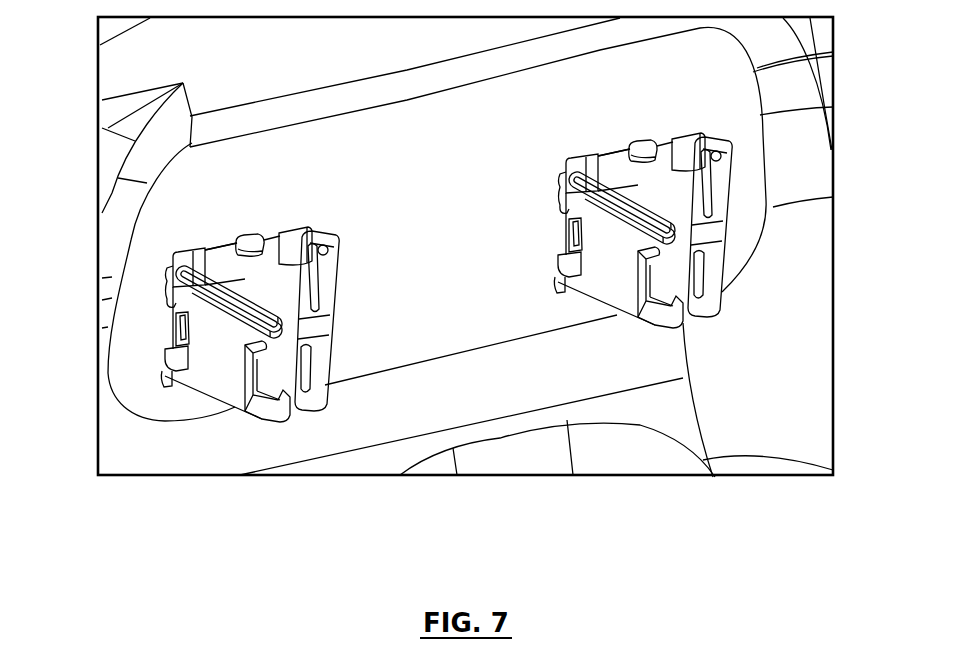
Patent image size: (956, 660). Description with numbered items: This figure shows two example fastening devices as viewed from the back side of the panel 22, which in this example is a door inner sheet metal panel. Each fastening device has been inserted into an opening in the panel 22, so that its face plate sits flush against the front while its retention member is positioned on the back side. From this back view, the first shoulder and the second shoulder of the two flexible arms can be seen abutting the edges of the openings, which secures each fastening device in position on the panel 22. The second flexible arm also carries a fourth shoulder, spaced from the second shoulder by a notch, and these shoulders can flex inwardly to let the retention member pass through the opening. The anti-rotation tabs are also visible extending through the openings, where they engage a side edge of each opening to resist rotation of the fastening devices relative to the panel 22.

The panel 22 is at (172, 183).